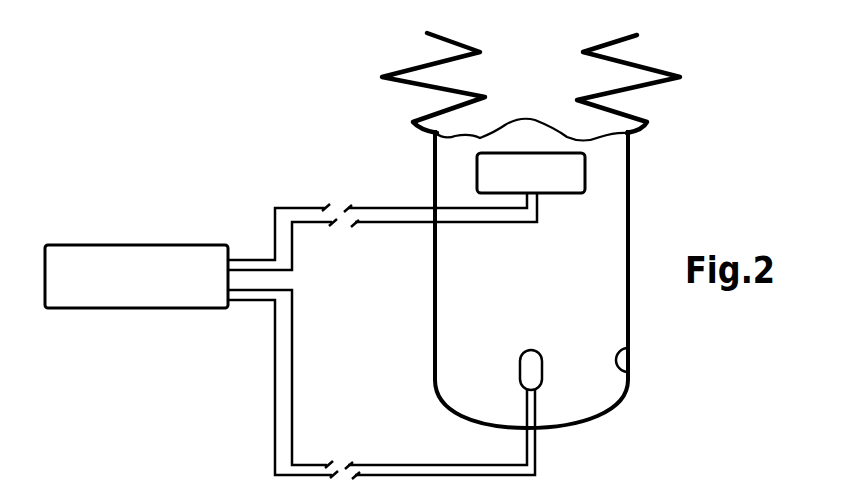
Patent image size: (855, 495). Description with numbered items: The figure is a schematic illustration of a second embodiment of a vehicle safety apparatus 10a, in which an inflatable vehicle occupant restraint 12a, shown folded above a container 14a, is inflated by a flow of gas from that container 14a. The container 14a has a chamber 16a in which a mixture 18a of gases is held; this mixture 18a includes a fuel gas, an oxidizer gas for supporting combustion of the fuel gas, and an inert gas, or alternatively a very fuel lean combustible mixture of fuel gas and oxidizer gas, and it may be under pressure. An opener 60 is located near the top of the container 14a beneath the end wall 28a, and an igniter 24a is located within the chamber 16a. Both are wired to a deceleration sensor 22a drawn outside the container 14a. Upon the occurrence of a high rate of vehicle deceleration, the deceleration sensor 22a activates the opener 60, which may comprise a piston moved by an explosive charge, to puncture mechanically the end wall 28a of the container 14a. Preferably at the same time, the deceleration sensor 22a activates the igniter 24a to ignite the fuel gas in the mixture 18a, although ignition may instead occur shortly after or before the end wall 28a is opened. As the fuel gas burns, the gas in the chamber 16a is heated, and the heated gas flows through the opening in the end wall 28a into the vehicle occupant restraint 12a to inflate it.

The vehicle safety apparatus 10a is at (733, 88).
The inflatable vehicle occupant restraint 12a is at (683, 75).
The container 14a is at (640, 217).
The chamber 16a is at (628, 368).
The mixture of gases 18a is at (577, 322).
The deceleration sensor 22a is at (222, 250).
The igniter 24a is at (527, 372).
The end wall 28a is at (532, 120).
The opener 60 is at (585, 172).